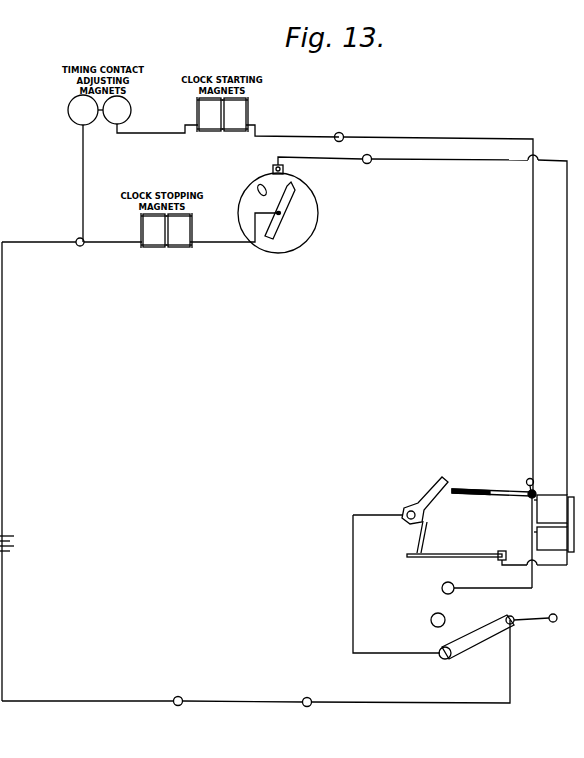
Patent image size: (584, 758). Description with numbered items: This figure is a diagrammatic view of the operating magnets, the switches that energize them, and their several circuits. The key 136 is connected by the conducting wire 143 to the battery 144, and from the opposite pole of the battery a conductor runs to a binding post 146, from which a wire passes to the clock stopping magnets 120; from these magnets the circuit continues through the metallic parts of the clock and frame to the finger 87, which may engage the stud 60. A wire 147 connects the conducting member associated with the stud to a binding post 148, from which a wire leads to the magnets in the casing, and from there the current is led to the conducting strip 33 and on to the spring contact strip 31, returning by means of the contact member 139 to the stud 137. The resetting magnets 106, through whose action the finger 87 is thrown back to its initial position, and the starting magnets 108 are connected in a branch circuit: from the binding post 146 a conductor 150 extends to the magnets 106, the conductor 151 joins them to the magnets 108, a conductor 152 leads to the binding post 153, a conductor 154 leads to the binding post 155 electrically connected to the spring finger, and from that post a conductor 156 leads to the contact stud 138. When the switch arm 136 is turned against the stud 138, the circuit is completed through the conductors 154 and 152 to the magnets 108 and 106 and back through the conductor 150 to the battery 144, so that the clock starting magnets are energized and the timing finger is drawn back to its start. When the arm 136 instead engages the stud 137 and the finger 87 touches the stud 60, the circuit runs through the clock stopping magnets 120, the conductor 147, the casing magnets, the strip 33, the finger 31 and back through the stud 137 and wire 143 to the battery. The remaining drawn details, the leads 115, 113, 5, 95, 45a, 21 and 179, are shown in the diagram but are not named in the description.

The magnets 106 is at (72, 112).
The conductor 150 is at (82, 163).
The conductor 151 is at (155, 137).
The starting magnets 108 is at (240, 122).
The conductor 152 is at (312, 134).
The binding post 153 is at (344, 133).
The conductor 154 is at (533, 197).
The binding post 148 is at (365, 165).
The wire 147 is at (328, 162).
The stud 60 is at (278, 208).
The finger 87 is at (277, 225).
The binding post 146 is at (76, 247).
The clock stopping magnets 120 is at (172, 250).
The conductor 115 is at (3, 413).
The battery 144 is at (14, 548).
The conducting wire 143 is at (412, 690).
The terminal 113 is at (131, 694).
The terminal 5 is at (312, 691).
The armature 95 is at (466, 491).
The binding post 155 is at (527, 480).
The contact 45a is at (534, 492).
The spring contact strip 31 is at (427, 530).
The conducting strip 33 is at (475, 556).
The conductor 156 is at (531, 530).
The magnet 21 is at (554, 530).
The contact member 139 is at (358, 590).
The contact stud 138 is at (455, 593).
The conductor 179 is at (554, 566).
The key 136 is at (485, 635).
The stud 137 is at (437, 661).